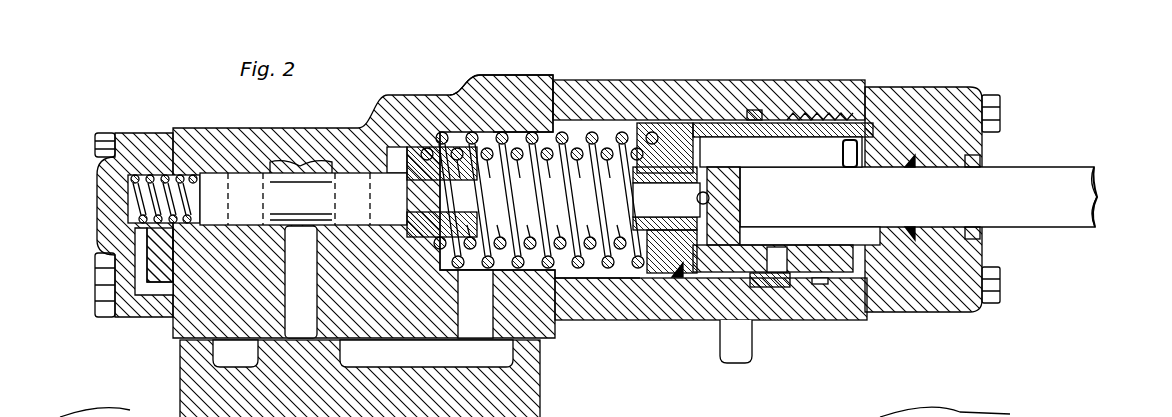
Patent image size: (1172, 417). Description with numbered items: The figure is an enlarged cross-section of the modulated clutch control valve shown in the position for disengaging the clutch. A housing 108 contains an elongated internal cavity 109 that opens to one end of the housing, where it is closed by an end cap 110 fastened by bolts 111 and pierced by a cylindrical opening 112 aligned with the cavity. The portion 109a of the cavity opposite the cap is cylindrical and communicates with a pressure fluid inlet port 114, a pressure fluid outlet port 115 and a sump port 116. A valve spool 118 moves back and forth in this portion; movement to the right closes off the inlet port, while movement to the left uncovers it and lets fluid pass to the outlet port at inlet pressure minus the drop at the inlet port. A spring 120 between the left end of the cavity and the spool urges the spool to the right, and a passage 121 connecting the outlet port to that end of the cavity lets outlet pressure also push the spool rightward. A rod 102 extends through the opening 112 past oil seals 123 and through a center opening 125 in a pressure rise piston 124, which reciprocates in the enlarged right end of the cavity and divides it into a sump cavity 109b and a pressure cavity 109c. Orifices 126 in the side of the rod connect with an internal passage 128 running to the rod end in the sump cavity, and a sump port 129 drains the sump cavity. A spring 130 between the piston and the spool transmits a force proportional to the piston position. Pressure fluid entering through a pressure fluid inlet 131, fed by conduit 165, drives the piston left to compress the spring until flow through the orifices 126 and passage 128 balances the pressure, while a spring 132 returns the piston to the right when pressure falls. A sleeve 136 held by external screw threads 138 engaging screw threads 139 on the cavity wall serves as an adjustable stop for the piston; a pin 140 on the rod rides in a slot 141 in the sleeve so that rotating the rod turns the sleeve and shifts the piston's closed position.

The rod 102 is at (1098, 185).
The housing 108 is at (730, 82).
The internal cavity 109 is at (601, 122).
The cylindrical portion of the cavity 109a is at (218, 176).
The sump cavity 109b is at (570, 216).
The pressure cavity 109c is at (806, 240).
The end cap 110 is at (985, 98).
The bolts 111 is at (1000, 290).
The cylindrical opening 112 is at (958, 168).
The pressure fluid inlet port 114 is at (235, 242).
The pressure fluid outlet port 115 is at (316, 250).
The sump port 116 is at (430, 222).
The valve spool 118 is at (298, 190).
The spring 120 is at (147, 225).
The passage 121 is at (157, 295).
The oil seals 123 is at (908, 158).
The pressure rise piston 124 is at (640, 170).
The center opening 125 is at (695, 168).
The orifices 126 is at (730, 207).
The internal passage 128 is at (641, 214).
The sump port 129 is at (473, 278).
The spring 130 is at (539, 200).
The pressure fluid inlet 131 is at (755, 288).
The spring 132 is at (537, 132).
The sleeve 136 is at (720, 268).
The external screw threads 138 is at (873, 264).
The screw threads 139 is at (827, 280).
The pin 140 is at (857, 163).
The slot 141 is at (768, 152).
The conduit 165 is at (727, 347).